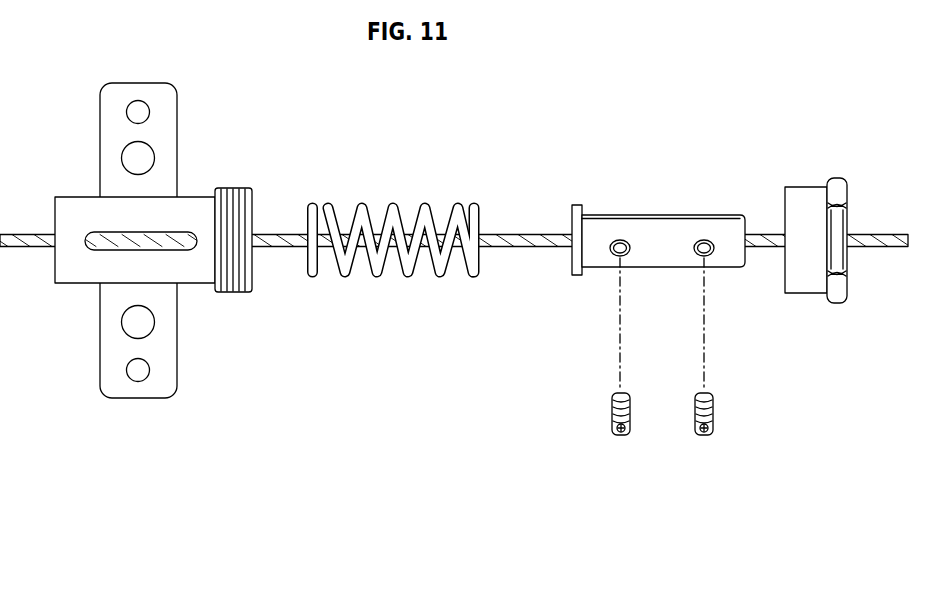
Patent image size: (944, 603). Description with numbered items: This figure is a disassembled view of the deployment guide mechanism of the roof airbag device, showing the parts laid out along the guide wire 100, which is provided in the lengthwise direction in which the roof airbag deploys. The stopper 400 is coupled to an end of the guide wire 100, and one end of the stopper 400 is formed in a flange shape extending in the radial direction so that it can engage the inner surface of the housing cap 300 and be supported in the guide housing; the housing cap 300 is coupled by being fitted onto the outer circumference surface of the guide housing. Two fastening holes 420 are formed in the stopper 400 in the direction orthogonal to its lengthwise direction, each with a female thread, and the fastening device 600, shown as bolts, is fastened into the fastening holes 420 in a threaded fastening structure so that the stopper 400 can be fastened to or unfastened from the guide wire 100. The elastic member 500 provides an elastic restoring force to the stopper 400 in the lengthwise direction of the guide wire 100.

The guide wire 100 is at (520, 237).
The housing cap 300 is at (805, 203).
The stopper 400 is at (665, 223).
The fastening hole 420 is at (613, 257).
The elastic member 500 is at (392, 206).
The fastening device 600 is at (704, 437).